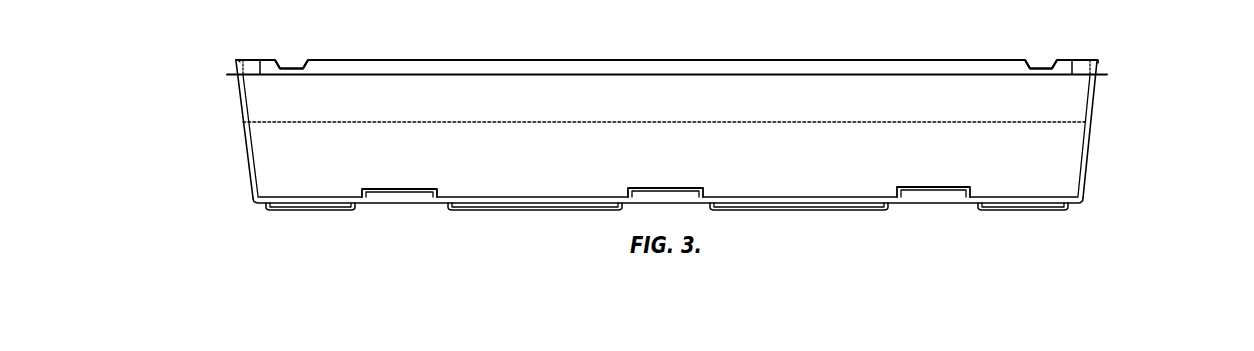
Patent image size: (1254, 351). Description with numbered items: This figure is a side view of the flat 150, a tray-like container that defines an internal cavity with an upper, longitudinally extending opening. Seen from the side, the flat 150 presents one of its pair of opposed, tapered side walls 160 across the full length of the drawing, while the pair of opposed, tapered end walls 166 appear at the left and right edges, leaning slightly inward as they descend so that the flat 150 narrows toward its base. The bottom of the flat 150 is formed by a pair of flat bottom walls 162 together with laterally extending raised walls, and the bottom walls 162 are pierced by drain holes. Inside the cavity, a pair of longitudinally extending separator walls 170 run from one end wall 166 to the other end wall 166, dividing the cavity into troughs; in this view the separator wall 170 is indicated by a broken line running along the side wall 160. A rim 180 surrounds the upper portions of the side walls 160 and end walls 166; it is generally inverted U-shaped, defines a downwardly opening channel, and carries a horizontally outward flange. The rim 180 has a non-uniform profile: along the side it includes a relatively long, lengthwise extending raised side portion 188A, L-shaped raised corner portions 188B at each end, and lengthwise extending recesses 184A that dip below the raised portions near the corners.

The flat 150 is at (702, 128).
The side wall 160 is at (543, 156).
The bottom wall 162 is at (818, 201).
The end wall 166 is at (238, 106).
The separator wall 170 is at (1055, 122).
The rim 180 is at (921, 58).
The lengthwise extending recess 184A is at (291, 61).
The raised side portion 188A is at (798, 67).
The raised corner portion 188B is at (270, 62).